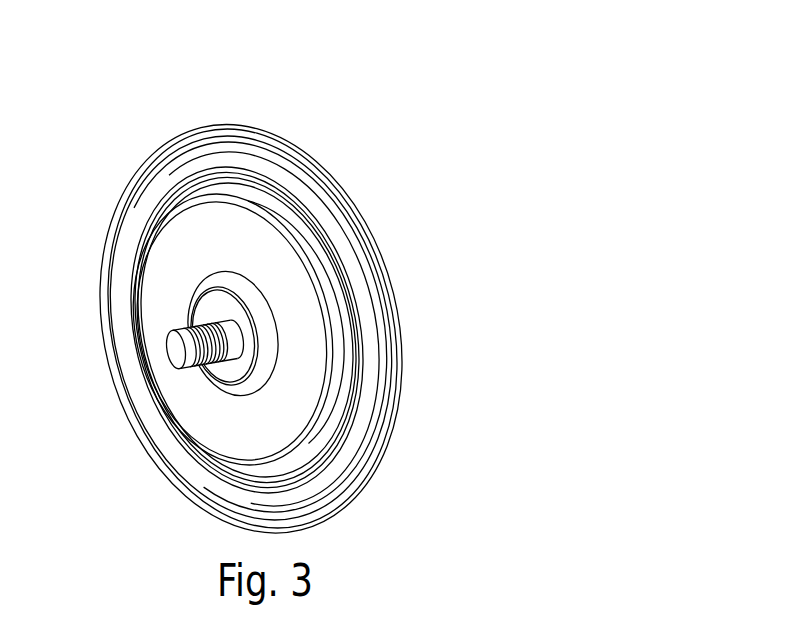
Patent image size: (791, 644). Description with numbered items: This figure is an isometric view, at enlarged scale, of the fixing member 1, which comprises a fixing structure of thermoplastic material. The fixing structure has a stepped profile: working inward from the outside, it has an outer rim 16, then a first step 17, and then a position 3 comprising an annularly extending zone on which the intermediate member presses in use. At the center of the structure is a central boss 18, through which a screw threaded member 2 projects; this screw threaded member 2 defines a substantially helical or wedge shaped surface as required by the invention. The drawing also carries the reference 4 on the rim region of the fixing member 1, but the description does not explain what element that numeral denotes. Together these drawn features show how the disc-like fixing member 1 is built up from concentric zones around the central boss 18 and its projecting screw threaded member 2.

The fixing member 1 is at (250, 328).
The screw threaded member 2 is at (180, 350).
The position 3 is at (318, 340).
The outer rim bead 4 is at (404, 369).
The outer rim 16 is at (328, 223).
The first step 17 is at (282, 217).
The central boss 18 is at (213, 280).